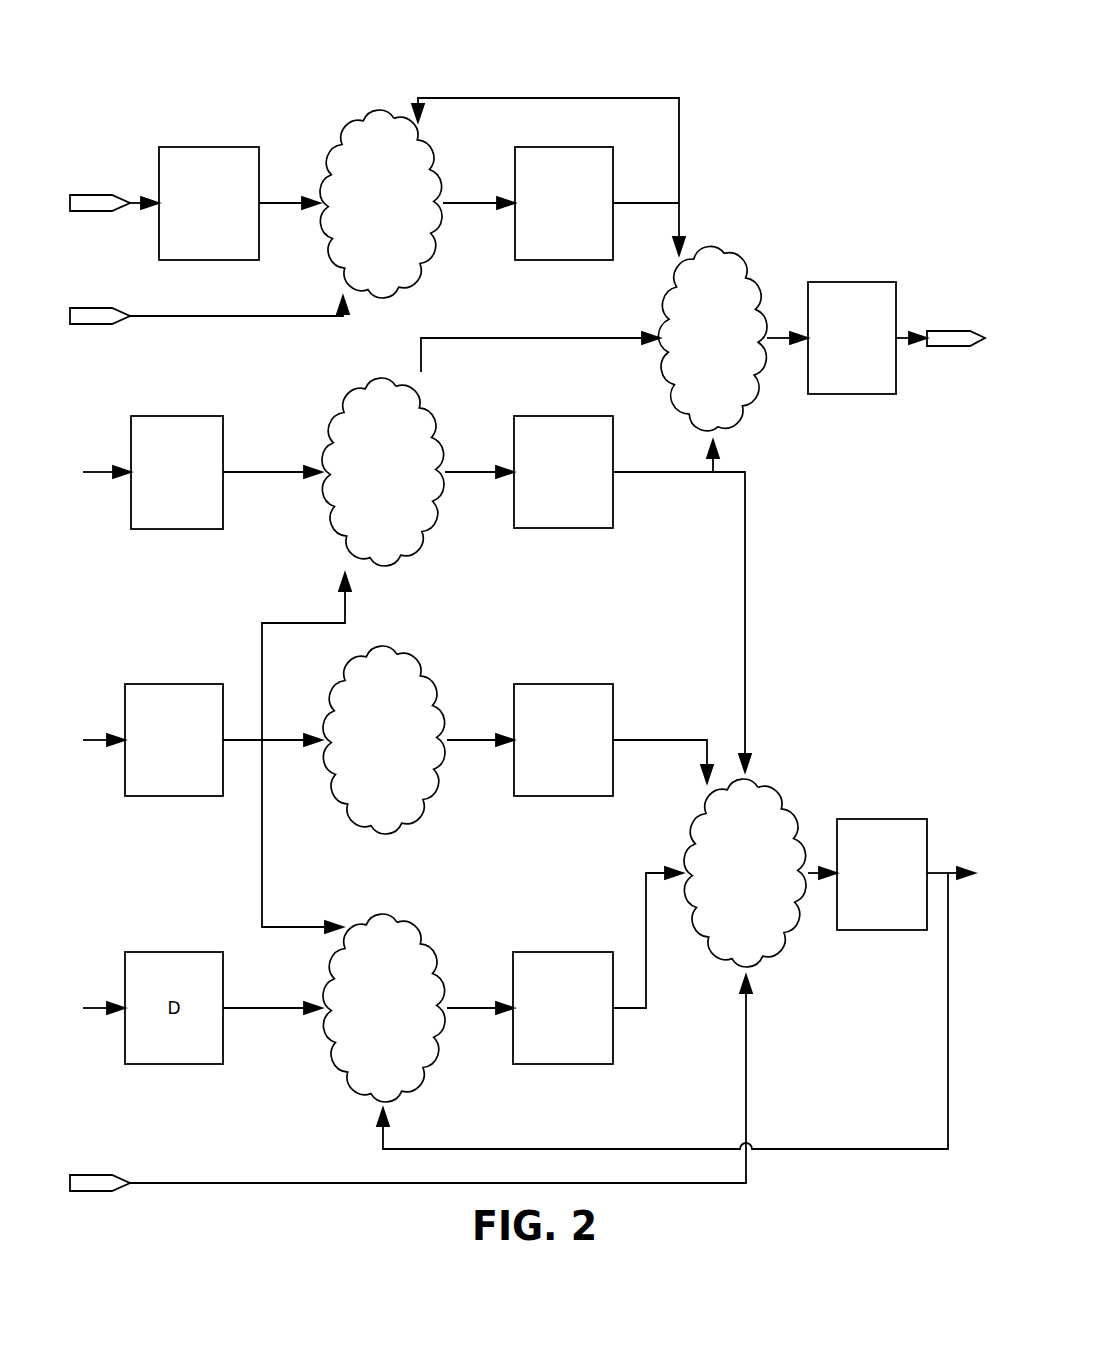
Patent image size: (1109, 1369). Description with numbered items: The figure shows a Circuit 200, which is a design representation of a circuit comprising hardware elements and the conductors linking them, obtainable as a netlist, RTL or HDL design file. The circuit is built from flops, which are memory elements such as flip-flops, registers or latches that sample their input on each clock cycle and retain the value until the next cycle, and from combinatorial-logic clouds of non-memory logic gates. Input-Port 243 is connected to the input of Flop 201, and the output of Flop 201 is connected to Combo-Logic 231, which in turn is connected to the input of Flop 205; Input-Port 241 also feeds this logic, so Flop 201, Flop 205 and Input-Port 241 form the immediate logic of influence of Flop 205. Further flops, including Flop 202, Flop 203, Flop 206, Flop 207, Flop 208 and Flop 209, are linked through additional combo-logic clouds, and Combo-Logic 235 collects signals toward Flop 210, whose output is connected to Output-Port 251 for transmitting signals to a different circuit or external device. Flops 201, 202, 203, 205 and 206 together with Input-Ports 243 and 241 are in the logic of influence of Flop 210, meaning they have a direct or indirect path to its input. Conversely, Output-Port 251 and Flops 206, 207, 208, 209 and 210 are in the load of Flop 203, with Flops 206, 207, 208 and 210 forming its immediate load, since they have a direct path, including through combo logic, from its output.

The circuit 200 is at (880, 98).
The flop 201 is at (205, 147).
The flop 202 is at (175, 416).
The flop 203 is at (175, 684).
The flop 205 is at (560, 260).
The flop 206 is at (562, 416).
The flop 207 is at (562, 684).
The flop 208 is at (562, 952).
The flop 209 is at (885, 819).
The flop 210 is at (880, 282).
The combo-logic 231 is at (382, 103).
The combo-logic 235 is at (745, 420).
The input-port 241 is at (100, 324).
The input-port 243 is at (97, 211).
The output-port 251 is at (955, 346).